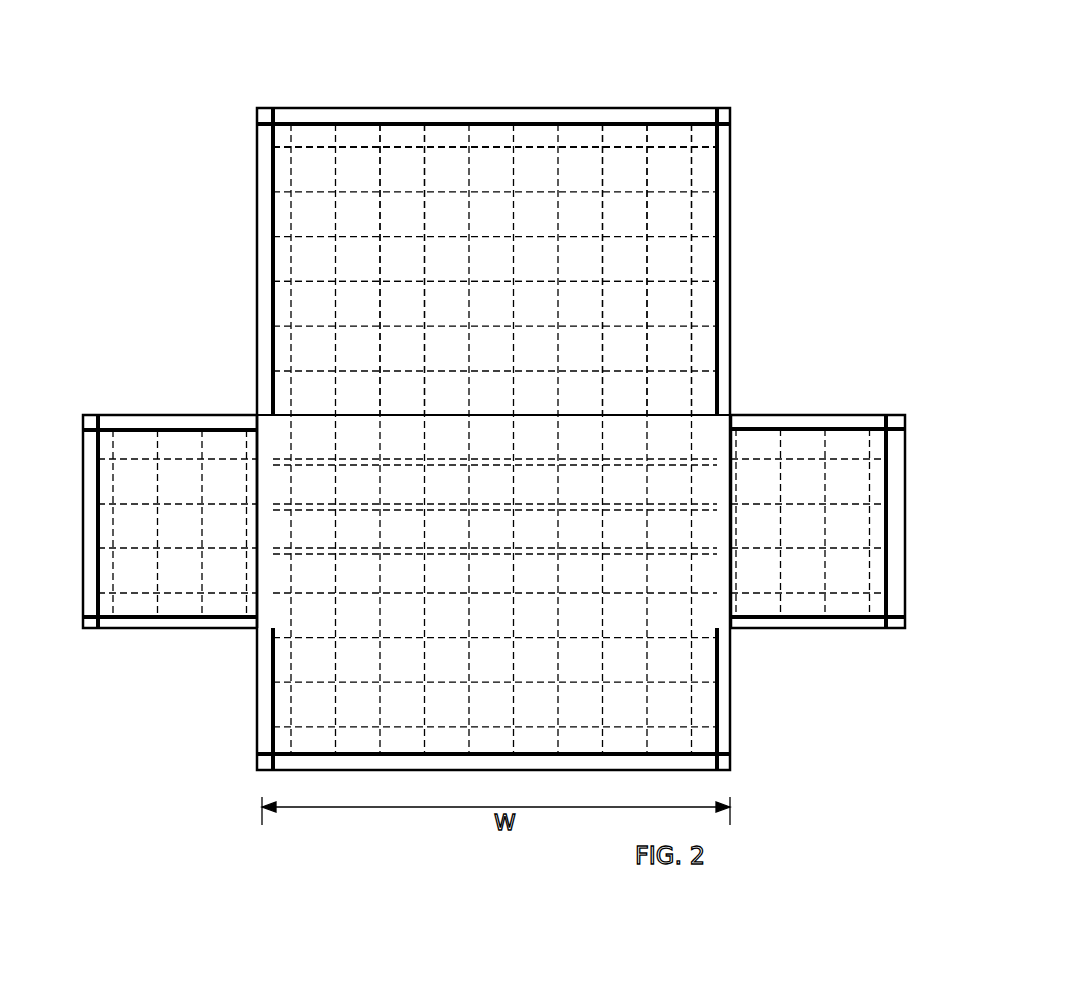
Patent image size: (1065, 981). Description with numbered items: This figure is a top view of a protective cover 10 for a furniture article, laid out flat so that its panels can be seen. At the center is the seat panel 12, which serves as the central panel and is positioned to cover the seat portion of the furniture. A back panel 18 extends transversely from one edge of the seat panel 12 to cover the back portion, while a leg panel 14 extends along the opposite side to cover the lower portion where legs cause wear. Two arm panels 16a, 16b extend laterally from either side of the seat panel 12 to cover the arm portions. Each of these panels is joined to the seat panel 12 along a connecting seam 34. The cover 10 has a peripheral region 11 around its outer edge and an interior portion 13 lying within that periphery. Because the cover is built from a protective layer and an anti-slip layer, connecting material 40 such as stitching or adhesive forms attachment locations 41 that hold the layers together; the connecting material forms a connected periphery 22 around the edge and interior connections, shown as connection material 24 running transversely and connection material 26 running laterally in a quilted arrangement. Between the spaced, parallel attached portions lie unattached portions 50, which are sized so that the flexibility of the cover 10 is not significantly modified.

The protective cover 10 is at (210, 243).
The peripheral region 11 is at (255, 148).
The seat panel 12 is at (327, 513).
The interior portion 13 is at (505, 243).
The leg panel 14 is at (698, 653).
The arm panel 16a is at (185, 562).
The arm panel 16b is at (860, 555).
The back panel 18 is at (680, 293).
The connected periphery 22 is at (717, 236).
The connection material 24 is at (658, 162).
The connection material 26 is at (433, 157).
The connecting seam 34 is at (682, 415).
The connecting material 40 is at (382, 148).
The attachment location 41 is at (382, 148).
The unattached portion 50 is at (676, 213).